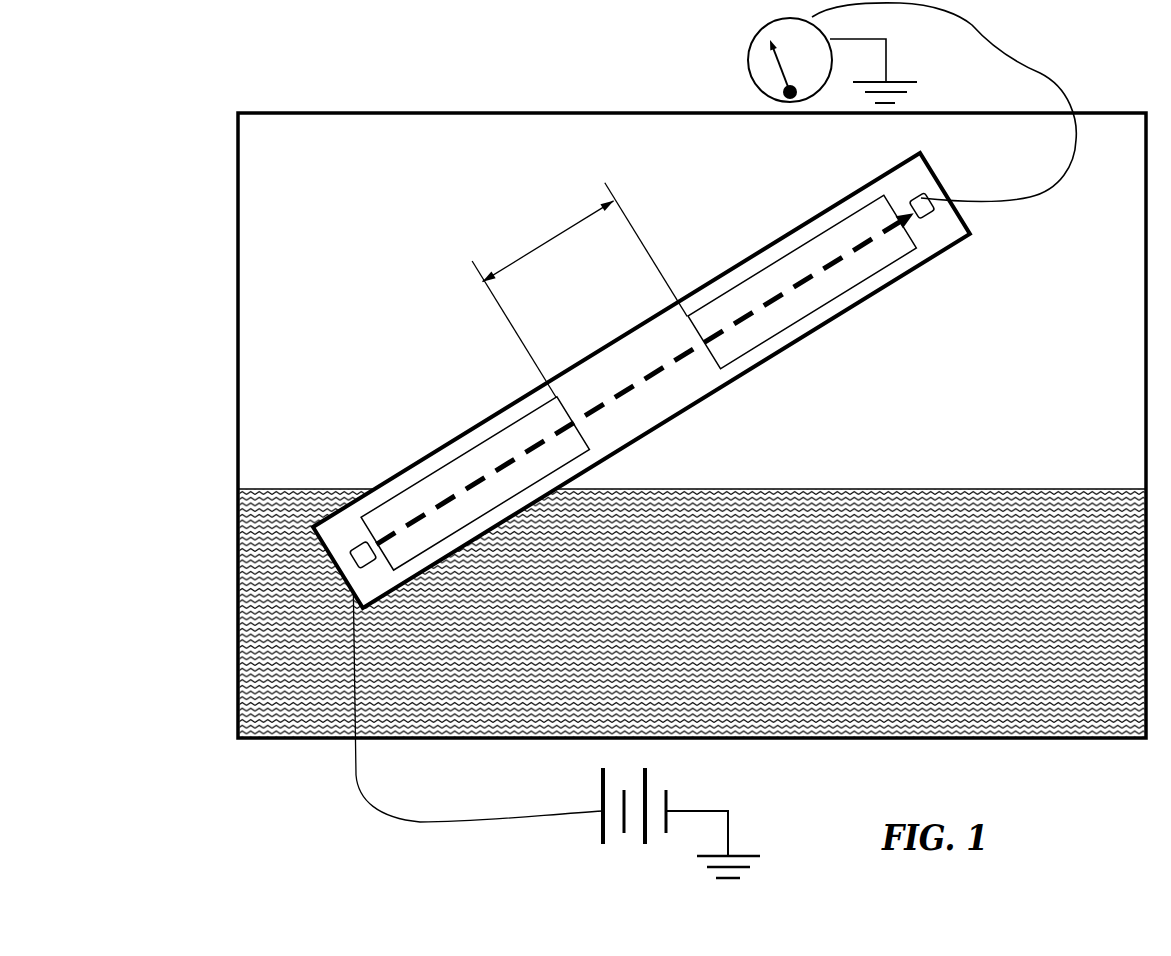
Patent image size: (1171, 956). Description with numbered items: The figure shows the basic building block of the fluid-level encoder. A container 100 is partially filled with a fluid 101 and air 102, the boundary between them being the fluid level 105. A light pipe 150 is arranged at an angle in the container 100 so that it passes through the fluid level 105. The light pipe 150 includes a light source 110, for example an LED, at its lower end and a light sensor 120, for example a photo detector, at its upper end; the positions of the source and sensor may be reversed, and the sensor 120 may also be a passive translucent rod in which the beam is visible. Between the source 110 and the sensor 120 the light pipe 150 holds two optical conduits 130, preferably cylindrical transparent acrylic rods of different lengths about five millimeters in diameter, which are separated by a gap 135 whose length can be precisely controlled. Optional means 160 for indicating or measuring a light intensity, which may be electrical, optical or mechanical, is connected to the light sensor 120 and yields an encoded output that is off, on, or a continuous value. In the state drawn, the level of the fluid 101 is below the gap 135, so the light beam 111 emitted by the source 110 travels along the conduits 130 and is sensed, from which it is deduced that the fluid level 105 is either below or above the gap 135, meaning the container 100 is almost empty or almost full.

The container 100 is at (322, 110).
The fluid 101 is at (624, 572).
The air 102 is at (410, 151).
The fluid level 105 is at (238, 487).
The light source 110 is at (350, 522).
The light beam 111 is at (862, 232).
The light sensor 120 is at (921, 200).
The optical conduits 130 is at (520, 425).
The gap 135 is at (542, 240).
The light pipe 150 is at (615, 335).
The means for indicating or measuring a light intensity 160 is at (760, 32).